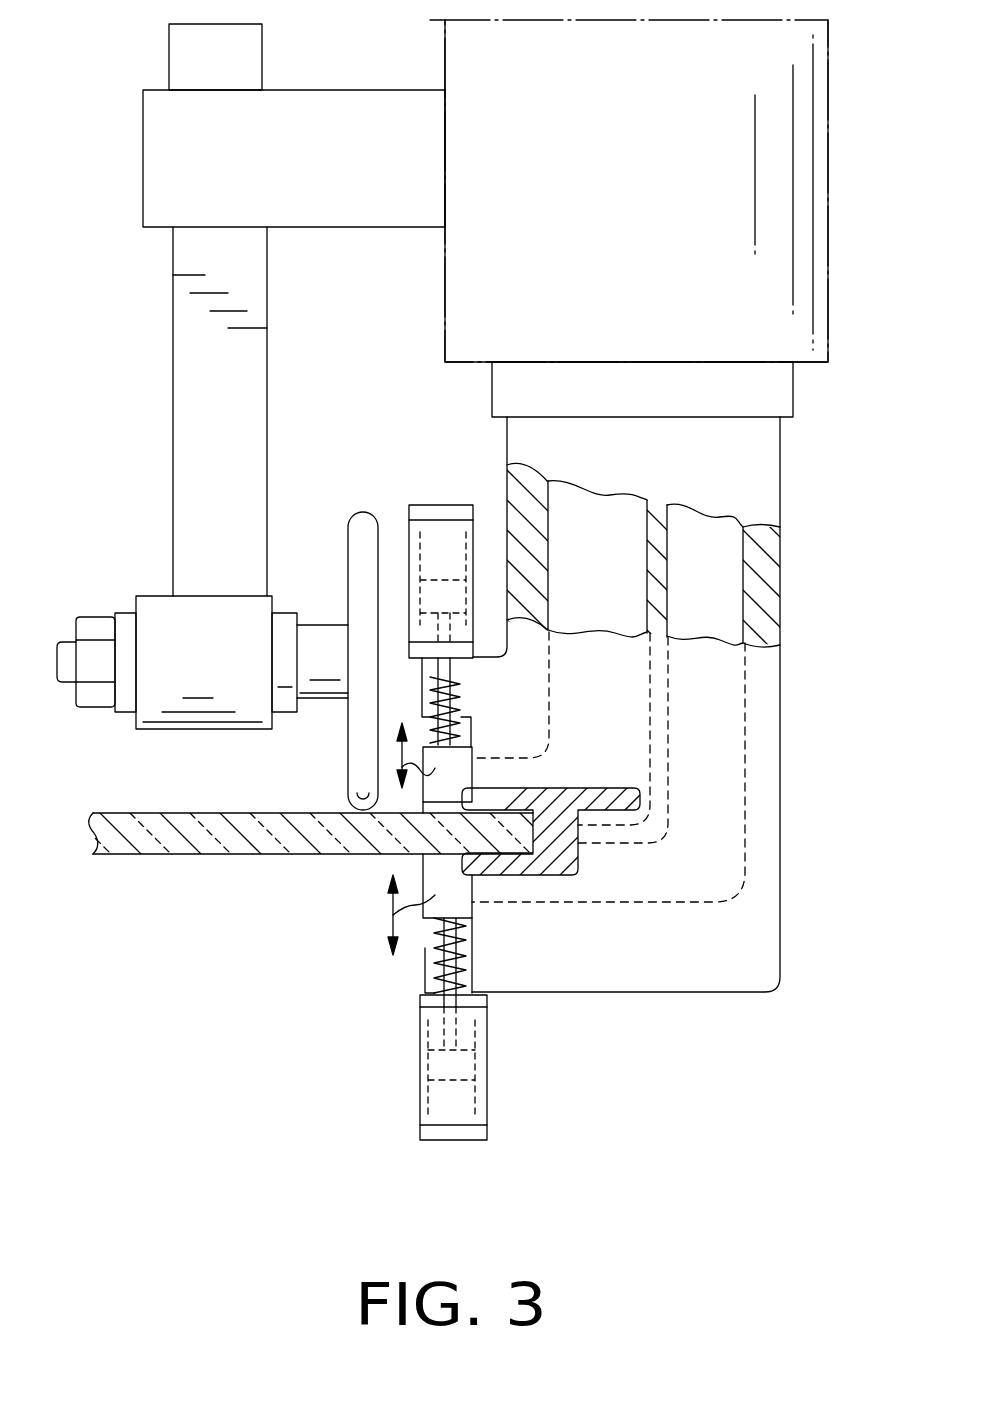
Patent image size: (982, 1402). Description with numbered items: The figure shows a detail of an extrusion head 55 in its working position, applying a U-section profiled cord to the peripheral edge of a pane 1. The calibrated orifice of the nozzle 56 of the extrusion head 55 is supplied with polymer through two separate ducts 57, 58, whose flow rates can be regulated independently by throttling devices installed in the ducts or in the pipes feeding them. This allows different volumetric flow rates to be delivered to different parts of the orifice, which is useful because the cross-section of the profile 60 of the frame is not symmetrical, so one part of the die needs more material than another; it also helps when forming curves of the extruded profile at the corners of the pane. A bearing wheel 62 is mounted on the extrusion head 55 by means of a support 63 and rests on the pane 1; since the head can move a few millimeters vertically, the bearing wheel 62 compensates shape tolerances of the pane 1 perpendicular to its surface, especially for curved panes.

The pane 1 is at (152, 840).
The extrusion head 55 is at (762, 728).
The nozzle 56 is at (545, 875).
The duct 57 is at (612, 573).
The duct 58 is at (721, 573).
The profile 60 is at (578, 847).
The bearing wheel 62 is at (362, 528).
The support 63 is at (237, 420).